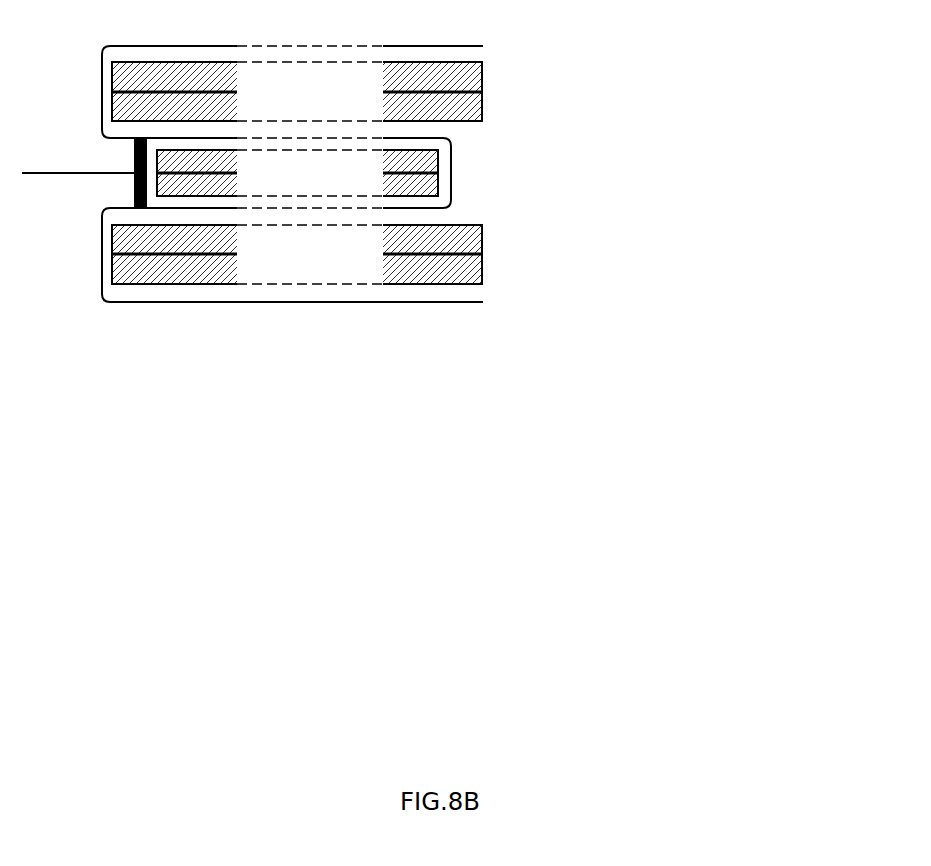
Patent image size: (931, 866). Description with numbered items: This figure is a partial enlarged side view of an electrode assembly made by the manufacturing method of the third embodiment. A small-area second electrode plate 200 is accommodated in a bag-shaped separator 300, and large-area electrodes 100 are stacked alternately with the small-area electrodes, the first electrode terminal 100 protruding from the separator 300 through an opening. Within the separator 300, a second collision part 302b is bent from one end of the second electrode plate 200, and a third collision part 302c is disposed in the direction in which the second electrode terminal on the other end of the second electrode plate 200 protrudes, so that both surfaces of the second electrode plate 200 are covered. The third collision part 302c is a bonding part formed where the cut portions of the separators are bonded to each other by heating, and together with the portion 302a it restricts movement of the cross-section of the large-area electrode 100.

The separator 300 is at (102, 91).
The third collision part 302c is at (134, 148).
The second collision part 302b is at (451, 172).
The first housing portion 302a is at (112, 254).
The second electrode plate 200 is at (428, 157).
The first electrode terminal 100 is at (473, 238).